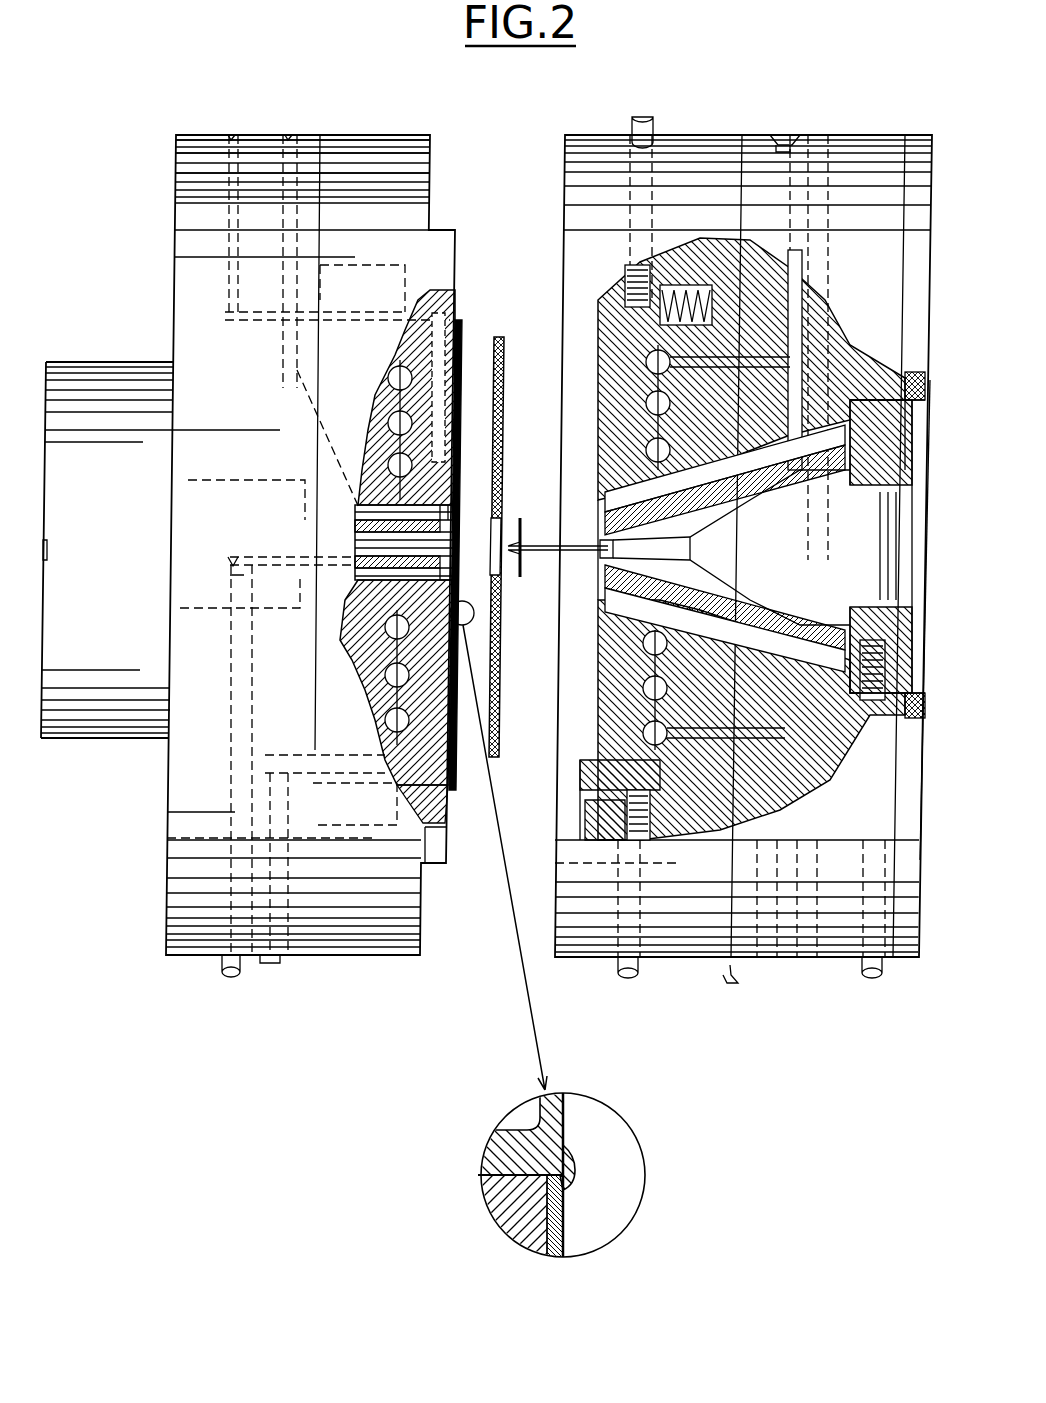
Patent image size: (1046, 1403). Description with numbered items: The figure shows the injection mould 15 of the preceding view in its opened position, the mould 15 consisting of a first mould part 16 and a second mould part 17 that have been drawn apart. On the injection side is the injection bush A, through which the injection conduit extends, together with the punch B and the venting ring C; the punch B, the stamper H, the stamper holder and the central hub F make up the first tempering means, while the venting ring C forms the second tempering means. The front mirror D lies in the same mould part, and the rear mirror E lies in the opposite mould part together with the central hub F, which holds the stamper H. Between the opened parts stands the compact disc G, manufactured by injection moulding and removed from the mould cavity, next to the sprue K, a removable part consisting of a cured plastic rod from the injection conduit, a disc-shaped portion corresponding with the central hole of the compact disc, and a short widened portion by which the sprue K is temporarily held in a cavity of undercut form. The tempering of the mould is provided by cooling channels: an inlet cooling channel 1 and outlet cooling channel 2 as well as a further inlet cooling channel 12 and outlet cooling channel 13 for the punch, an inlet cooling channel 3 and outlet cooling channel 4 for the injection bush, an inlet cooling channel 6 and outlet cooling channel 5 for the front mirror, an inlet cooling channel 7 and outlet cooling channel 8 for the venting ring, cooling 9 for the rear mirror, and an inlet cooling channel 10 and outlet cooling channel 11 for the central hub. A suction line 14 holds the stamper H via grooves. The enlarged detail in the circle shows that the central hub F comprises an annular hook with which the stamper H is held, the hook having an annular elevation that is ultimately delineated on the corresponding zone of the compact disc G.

The inlet cooling channel punch 1 is at (812, 148).
The outlet cooling channel punch 2 is at (800, 962).
The inlet cooling channel injection bush 3 is at (876, 972).
The outlet cooling channel injection bush 4 is at (842, 492).
The outlet cooling channel front mirror 5 is at (750, 962).
The inlet cooling channel front mirror 6 is at (780, 140).
The inlet cooling channel venting ring 7 is at (628, 982).
The outlet cooling channel venting ring 8 is at (640, 125).
The cooling rear mirror 9 is at (282, 970).
The inlet cooling channel central hub 10 is at (358, 645).
The outlet cooling channel central hub 11 is at (292, 133).
The inlet cooling channel punch 12 is at (228, 978).
The outlet cooling channel punch 13 is at (300, 530).
The suction line 14 is at (233, 133).
The mould 15 is at (264, 1042).
The first mould part 16 is at (379, 979).
The second mould part 17 is at (695, 992).
The injection bush A is at (700, 565).
The punch B is at (751, 389).
The venting ring C is at (751, 699).
The front mirror D is at (678, 832).
The rear mirror E is at (392, 790).
The central hub F is at (357, 508).
The compact disc G is at (500, 340).
The stamper H is at (458, 322).
The sprue K is at (527, 578).